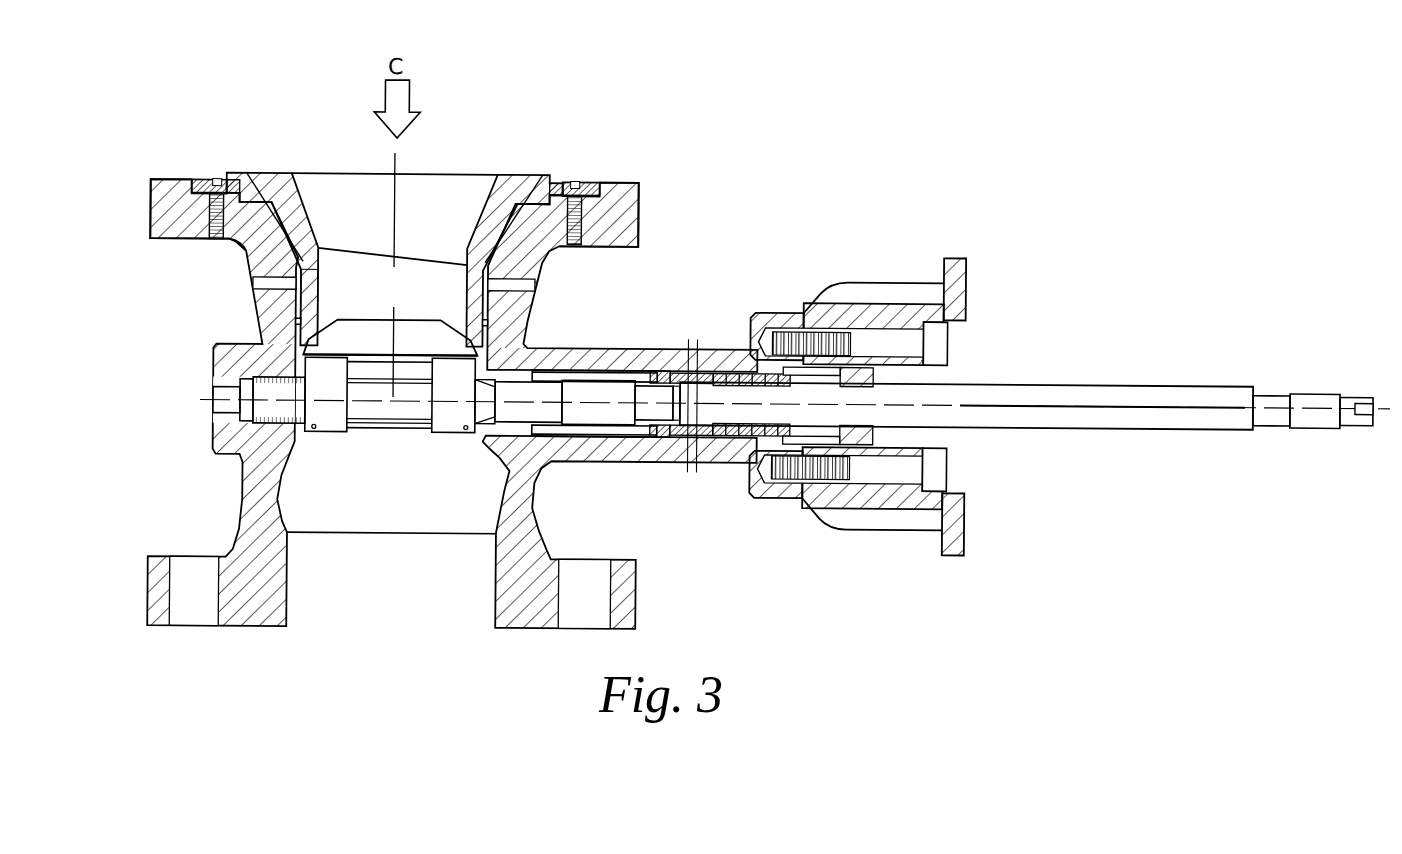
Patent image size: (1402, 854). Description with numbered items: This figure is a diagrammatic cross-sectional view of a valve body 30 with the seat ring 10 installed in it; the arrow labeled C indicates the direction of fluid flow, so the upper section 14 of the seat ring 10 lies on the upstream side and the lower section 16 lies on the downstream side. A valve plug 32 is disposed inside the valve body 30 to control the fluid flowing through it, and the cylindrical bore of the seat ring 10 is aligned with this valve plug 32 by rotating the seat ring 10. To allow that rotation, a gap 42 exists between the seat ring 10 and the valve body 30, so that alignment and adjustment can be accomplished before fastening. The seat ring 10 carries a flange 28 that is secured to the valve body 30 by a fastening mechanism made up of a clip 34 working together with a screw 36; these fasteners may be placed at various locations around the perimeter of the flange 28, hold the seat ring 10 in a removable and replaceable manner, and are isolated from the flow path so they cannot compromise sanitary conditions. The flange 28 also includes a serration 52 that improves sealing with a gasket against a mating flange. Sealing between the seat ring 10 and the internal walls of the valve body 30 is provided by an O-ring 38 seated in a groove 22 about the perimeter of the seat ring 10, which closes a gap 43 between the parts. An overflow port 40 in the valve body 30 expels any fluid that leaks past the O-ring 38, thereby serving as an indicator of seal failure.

The seat ring 10 is at (343, 186).
The upper section 14 is at (419, 224).
The lower section 16 is at (414, 301).
The groove 22 is at (342, 343).
The flange 28 is at (232, 174).
The valve body 30 is at (600, 461).
The valve plug 32 is at (312, 334).
The clip 34 is at (193, 179).
The screw 36 is at (214, 180).
The O-ring 38 is at (487, 333).
The overflow port 40 is at (532, 284).
The gap 42 is at (243, 247).
The gap 43 is at (316, 333).
The serration 52 is at (527, 175).